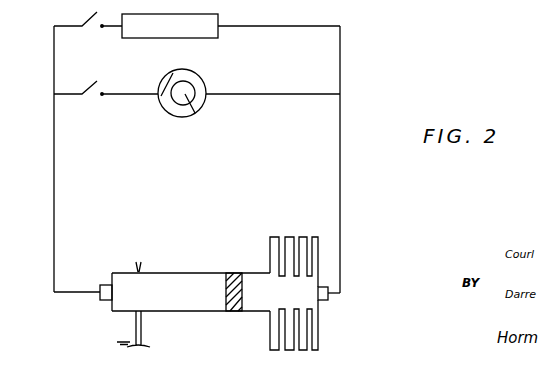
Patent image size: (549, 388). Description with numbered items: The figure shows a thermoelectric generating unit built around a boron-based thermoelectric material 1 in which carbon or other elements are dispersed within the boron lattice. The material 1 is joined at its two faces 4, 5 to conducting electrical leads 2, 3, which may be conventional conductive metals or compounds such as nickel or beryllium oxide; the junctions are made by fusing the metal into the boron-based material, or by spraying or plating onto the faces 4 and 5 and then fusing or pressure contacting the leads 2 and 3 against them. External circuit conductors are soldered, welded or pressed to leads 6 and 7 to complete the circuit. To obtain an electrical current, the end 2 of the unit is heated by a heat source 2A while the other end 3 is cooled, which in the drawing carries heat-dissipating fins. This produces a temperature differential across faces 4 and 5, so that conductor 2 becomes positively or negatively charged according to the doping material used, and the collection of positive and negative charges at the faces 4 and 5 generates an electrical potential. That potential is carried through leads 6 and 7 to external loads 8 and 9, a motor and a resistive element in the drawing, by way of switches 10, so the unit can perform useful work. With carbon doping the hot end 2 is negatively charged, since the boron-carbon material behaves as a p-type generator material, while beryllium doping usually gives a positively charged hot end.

The thermoelectric material 1 is at (232, 312).
The conducting electrical lead 2 is at (183, 312).
The heat source 2A is at (135, 326).
The conducting electrical lead 3 is at (312, 305).
The face 4 is at (226, 283).
The face 5 is at (243, 285).
The lead 6 is at (340, 158).
The lead 7 is at (53, 141).
The external load 8 is at (249, 87).
The external load 9 is at (231, 26).
The switch 10 is at (106, 68).